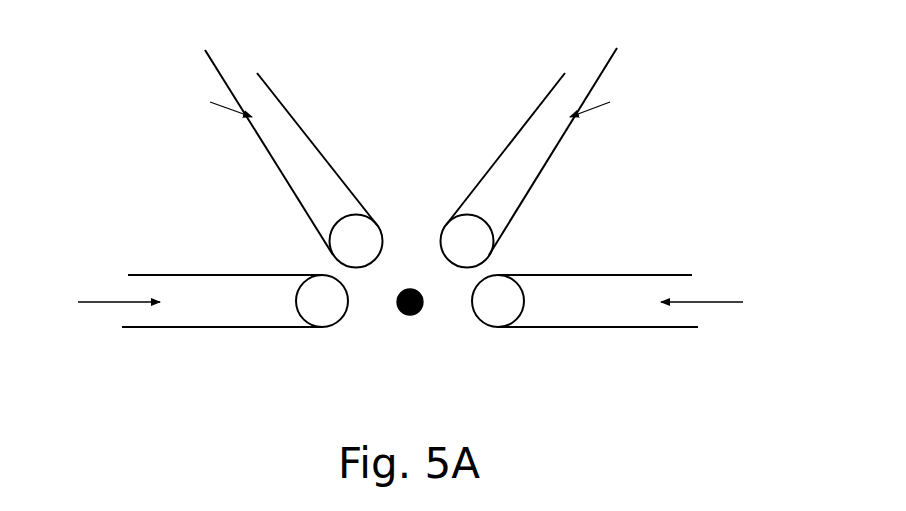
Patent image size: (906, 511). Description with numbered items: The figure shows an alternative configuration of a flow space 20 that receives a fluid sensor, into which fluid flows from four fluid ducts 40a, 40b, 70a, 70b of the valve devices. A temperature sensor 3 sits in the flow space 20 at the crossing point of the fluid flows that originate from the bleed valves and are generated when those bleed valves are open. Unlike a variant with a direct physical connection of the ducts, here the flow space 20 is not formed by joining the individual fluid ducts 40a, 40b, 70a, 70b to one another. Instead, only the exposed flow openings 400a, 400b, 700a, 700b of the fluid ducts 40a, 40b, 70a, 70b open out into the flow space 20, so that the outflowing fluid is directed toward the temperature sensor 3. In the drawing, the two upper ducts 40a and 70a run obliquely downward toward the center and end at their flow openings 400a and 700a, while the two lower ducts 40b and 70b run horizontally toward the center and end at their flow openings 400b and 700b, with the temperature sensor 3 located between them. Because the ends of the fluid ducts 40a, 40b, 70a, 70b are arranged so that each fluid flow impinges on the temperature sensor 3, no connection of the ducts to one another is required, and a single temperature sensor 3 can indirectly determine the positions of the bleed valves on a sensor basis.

The fluid duct 40a is at (280, 103).
The flow opening 400a is at (345, 223).
The fluid duct 70a is at (567, 138).
The flow opening 700a is at (452, 220).
The fluid duct 40b is at (198, 272).
The flow opening 400b is at (327, 315).
The fluid duct 70b is at (614, 337).
The flow opening 700b is at (495, 315).
The temperature sensor 3 is at (410, 315).
The flow space 20 is at (442, 278).